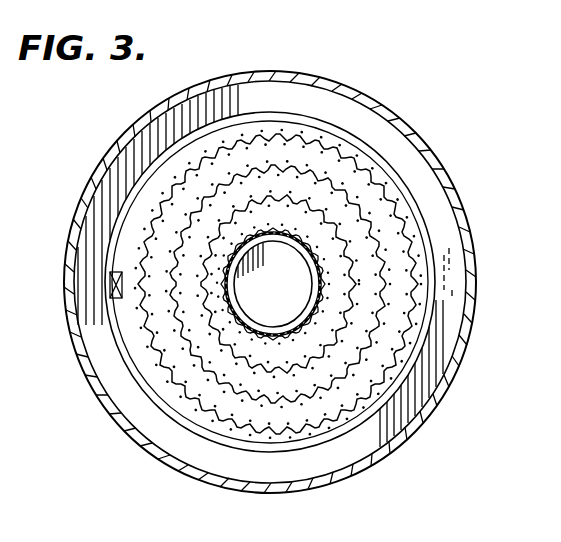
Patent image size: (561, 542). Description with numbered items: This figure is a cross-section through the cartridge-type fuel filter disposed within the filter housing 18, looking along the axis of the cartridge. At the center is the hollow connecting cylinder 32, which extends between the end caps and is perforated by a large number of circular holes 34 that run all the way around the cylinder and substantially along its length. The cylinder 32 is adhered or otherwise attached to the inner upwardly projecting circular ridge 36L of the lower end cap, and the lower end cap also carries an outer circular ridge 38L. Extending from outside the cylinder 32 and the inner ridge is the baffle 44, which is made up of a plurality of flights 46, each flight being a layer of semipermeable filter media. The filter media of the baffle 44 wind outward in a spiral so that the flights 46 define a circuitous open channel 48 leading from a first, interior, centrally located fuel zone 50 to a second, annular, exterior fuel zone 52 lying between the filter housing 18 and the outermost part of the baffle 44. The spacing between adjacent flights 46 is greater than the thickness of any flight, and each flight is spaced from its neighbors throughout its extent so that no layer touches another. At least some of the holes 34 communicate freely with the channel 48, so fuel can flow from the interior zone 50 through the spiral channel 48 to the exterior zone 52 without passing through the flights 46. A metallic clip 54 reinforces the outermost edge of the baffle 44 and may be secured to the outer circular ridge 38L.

The filter housing 18 is at (305, 492).
The hollow connecting cylinder 32 is at (217, 261).
The circular holes 34 is at (228, 289).
The inner upwardly projecting circular ridge 36L is at (297, 292).
The outer circular ridge 38L is at (150, 403).
The baffle 44 is at (397, 367).
The flights 46 is at (443, 207).
The circuitous open channel 48 is at (268, 180).
The interior fuel zone 50 is at (271, 302).
The exterior fuel zone 52 is at (195, 448).
The metallic clip 54 is at (120, 307).